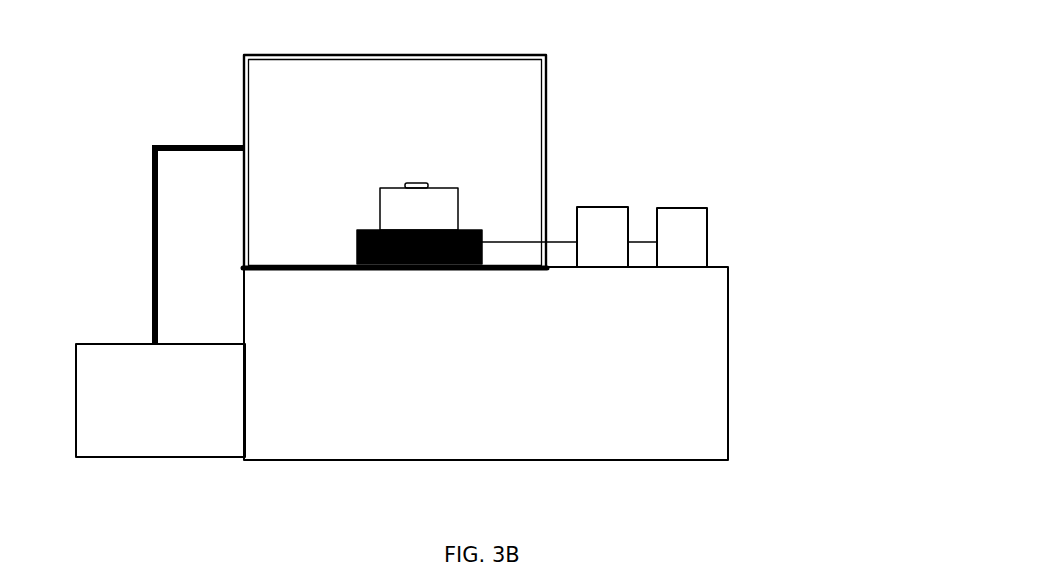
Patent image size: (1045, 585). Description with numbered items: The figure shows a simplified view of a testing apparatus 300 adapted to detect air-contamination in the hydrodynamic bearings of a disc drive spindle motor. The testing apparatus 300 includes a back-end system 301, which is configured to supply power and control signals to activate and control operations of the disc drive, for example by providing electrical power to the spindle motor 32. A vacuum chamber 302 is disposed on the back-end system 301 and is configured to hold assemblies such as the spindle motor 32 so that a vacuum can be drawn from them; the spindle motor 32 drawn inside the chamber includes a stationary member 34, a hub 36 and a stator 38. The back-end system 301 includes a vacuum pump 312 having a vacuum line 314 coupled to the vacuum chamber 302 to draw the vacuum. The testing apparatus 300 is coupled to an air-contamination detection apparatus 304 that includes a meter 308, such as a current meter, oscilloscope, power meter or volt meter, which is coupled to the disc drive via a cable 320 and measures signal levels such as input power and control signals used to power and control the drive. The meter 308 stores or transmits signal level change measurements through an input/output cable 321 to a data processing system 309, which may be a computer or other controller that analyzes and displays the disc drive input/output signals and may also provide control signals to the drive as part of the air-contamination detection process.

The testing apparatus 300 is at (770, 99).
The back-end system 301 is at (729, 368).
The vacuum chamber 302 is at (548, 103).
The air-contamination detection apparatus 304 is at (698, 116).
The meter 308 is at (602, 206).
The data processing system 309 is at (707, 208).
The vacuum pump 312 is at (73, 383).
The vacuum line 314 is at (178, 143).
The cable 320 is at (567, 243).
The input/output cable 321 is at (640, 243).
The spindle motor 32 is at (366, 138).
The stationary member 34 is at (405, 186).
The hub 36 is at (380, 210).
The stator 38 is at (360, 246).